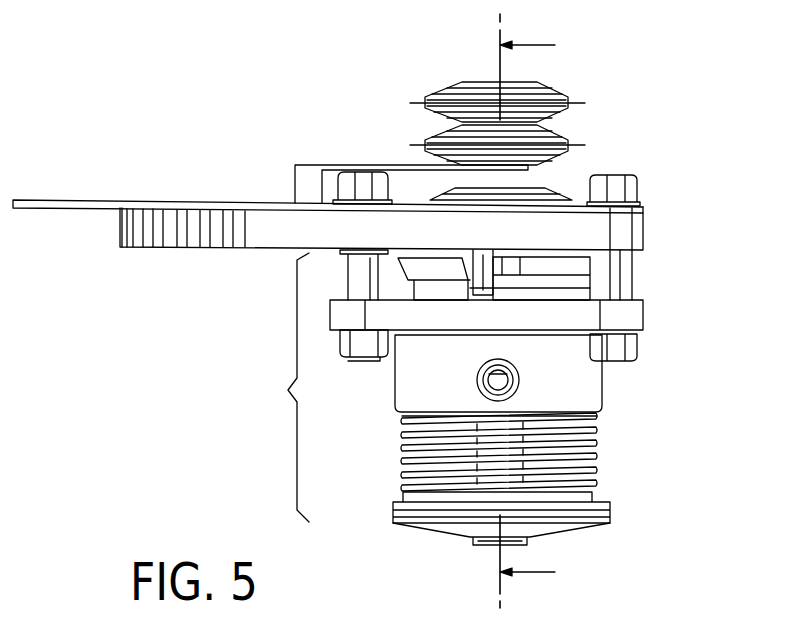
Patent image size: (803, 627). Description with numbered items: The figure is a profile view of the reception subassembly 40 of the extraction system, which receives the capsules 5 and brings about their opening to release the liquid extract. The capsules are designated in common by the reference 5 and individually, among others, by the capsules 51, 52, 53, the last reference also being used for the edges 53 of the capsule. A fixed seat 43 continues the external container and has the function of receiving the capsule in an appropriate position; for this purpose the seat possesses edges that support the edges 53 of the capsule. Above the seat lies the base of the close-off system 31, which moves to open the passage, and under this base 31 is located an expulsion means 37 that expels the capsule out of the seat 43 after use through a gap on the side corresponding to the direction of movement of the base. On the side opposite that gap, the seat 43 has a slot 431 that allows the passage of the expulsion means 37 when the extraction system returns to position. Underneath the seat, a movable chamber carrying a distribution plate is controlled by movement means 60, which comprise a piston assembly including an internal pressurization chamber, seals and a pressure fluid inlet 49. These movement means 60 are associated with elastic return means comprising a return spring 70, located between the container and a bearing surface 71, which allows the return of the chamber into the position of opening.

The capsules 5 is at (615, 99).
The base of the close-off system 31 is at (260, 238).
The expulsion means 37 is at (487, 258).
The reception subassembly 40 is at (450, 386).
The fixed seat 43 is at (583, 267).
The slot 431 is at (505, 288).
The pressure fluid inlet 49 is at (520, 373).
The capsule 51 is at (553, 197).
The capsule 52 is at (435, 147).
The edges of the capsule 53 is at (435, 100).
The movement means 60 is at (603, 458).
The return spring 70 is at (592, 492).
The bearing surface 71 is at (578, 528).